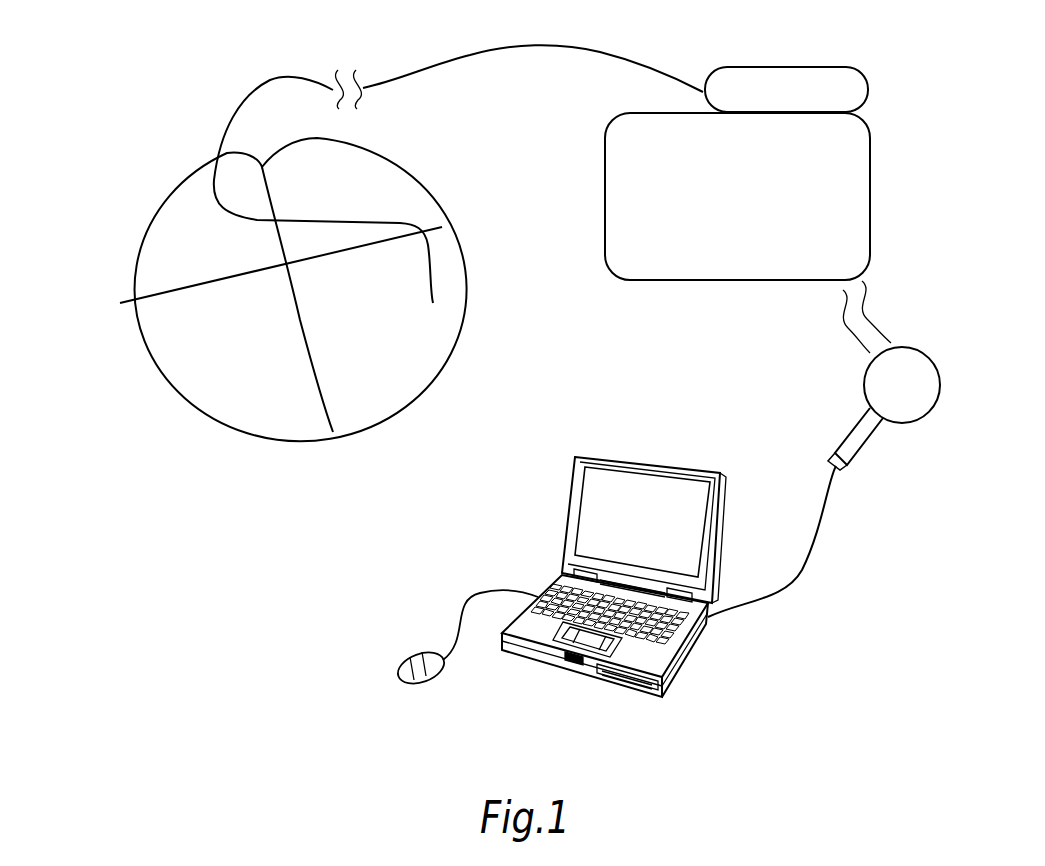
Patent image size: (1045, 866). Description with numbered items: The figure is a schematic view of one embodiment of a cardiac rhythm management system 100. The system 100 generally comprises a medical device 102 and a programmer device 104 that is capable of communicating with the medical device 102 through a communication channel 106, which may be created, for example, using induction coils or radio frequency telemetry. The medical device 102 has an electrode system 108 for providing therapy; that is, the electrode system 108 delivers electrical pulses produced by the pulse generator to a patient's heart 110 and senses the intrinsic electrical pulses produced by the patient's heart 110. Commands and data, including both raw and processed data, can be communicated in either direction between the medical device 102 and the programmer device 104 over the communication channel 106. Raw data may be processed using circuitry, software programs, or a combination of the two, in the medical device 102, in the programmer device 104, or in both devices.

The cardiac rhythm management system 100 is at (150, 66).
The medical device 102 is at (870, 130).
The programmer device 104 is at (683, 670).
The communication channel 106 is at (868, 372).
The electrode system 108 is at (450, 62).
The patient's heart 110 is at (125, 268).